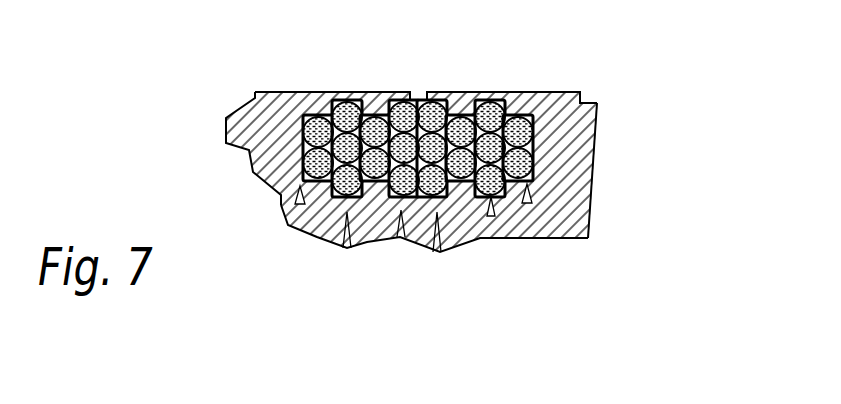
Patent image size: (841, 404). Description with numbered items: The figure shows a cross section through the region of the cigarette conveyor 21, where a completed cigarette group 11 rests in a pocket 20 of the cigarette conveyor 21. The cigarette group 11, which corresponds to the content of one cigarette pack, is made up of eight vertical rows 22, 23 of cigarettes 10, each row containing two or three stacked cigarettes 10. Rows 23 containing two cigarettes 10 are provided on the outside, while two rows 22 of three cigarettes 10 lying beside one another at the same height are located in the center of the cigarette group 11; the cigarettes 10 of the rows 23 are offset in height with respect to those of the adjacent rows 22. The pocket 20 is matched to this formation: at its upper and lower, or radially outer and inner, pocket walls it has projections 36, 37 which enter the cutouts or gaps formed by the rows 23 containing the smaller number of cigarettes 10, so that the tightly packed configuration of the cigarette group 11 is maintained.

The cigarette 10 is at (303, 170).
The cigarette group 11 is at (548, 153).
The pocket 20 is at (641, 124).
The cigarette conveyor 21 is at (150, 107).
The row made up of three stacked cigarettes 22 is at (490, 198).
The row made up of two stacked cigarettes 23 is at (550, 239).
The projection 36 is at (547, 99).
The projection 37 is at (462, 192).